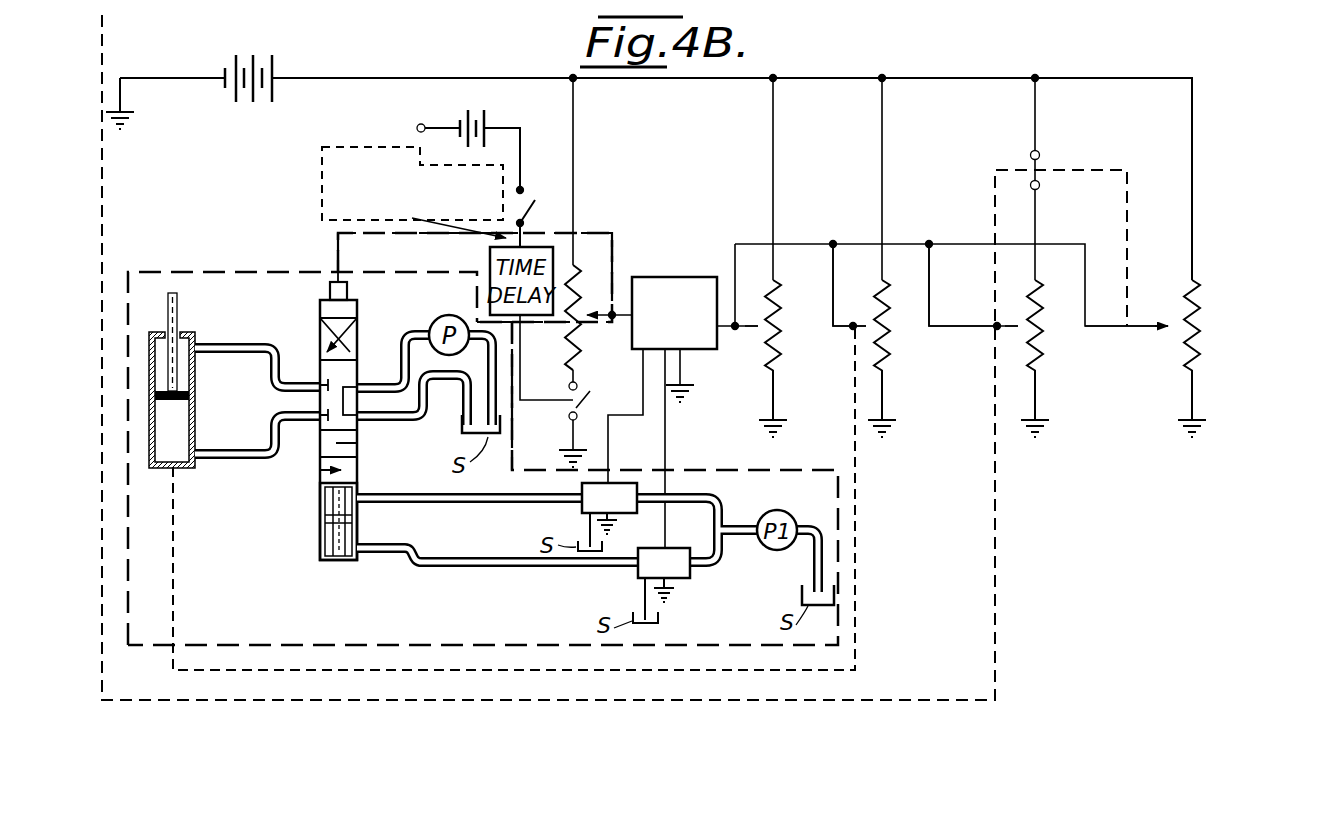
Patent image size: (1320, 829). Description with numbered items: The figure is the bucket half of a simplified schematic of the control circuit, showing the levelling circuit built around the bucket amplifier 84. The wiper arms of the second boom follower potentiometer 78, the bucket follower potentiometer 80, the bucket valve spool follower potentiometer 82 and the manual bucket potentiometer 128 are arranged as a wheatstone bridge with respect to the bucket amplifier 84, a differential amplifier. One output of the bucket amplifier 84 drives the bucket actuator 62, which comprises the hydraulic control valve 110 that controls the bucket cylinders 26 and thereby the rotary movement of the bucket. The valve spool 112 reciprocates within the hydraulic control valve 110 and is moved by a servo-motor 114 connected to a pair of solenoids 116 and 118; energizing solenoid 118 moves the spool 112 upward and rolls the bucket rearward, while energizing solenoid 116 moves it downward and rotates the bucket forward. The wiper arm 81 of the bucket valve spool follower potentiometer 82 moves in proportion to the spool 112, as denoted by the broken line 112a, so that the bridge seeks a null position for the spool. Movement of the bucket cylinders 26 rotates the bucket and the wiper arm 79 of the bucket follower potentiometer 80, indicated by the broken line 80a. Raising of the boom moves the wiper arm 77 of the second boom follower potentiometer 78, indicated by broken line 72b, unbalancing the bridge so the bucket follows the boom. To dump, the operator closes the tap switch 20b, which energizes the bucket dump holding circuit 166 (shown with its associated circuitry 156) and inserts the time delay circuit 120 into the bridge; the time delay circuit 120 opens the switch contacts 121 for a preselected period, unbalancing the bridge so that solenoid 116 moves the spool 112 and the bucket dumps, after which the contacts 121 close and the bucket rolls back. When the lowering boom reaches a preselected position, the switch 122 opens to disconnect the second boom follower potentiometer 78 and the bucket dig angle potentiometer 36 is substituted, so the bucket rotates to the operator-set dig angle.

The broken line 72b is at (103, 53).
The bucket dump circuit 156 is at (408, 174).
The holding circuit 166 is at (412, 183).
The tap switch 20b is at (537, 204).
The bucket actuator 62 is at (289, 268).
The broken line 80a is at (856, 521).
The broken line 112a is at (342, 266).
The valve spool 112 is at (347, 289).
The hydraulic control valve 110 is at (321, 340).
The servo-motor 114 is at (318, 552).
The bucket cylinders 26 is at (188, 470).
The solenoid 116 is at (580, 508).
The solenoid 118 is at (688, 580).
The time delay circuit 120 is at (538, 316).
The switch contacts 121 is at (578, 402).
The bucket valve spool follower potentiometer 82 is at (569, 363).
The wiper arm 81 is at (595, 314).
The bucket amplifier 84 is at (725, 279).
The manual bucket potentiometer 128 is at (783, 337).
The wiper arm 79 is at (864, 325).
The bucket follower potentiometer 80 is at (895, 340).
The wiper arm 77 is at (1012, 325).
The second boom follower potentiometer 78 is at (1047, 302).
The switch 122 is at (1042, 165).
The bucket dig angle potentiometer 36 is at (1283, 222).